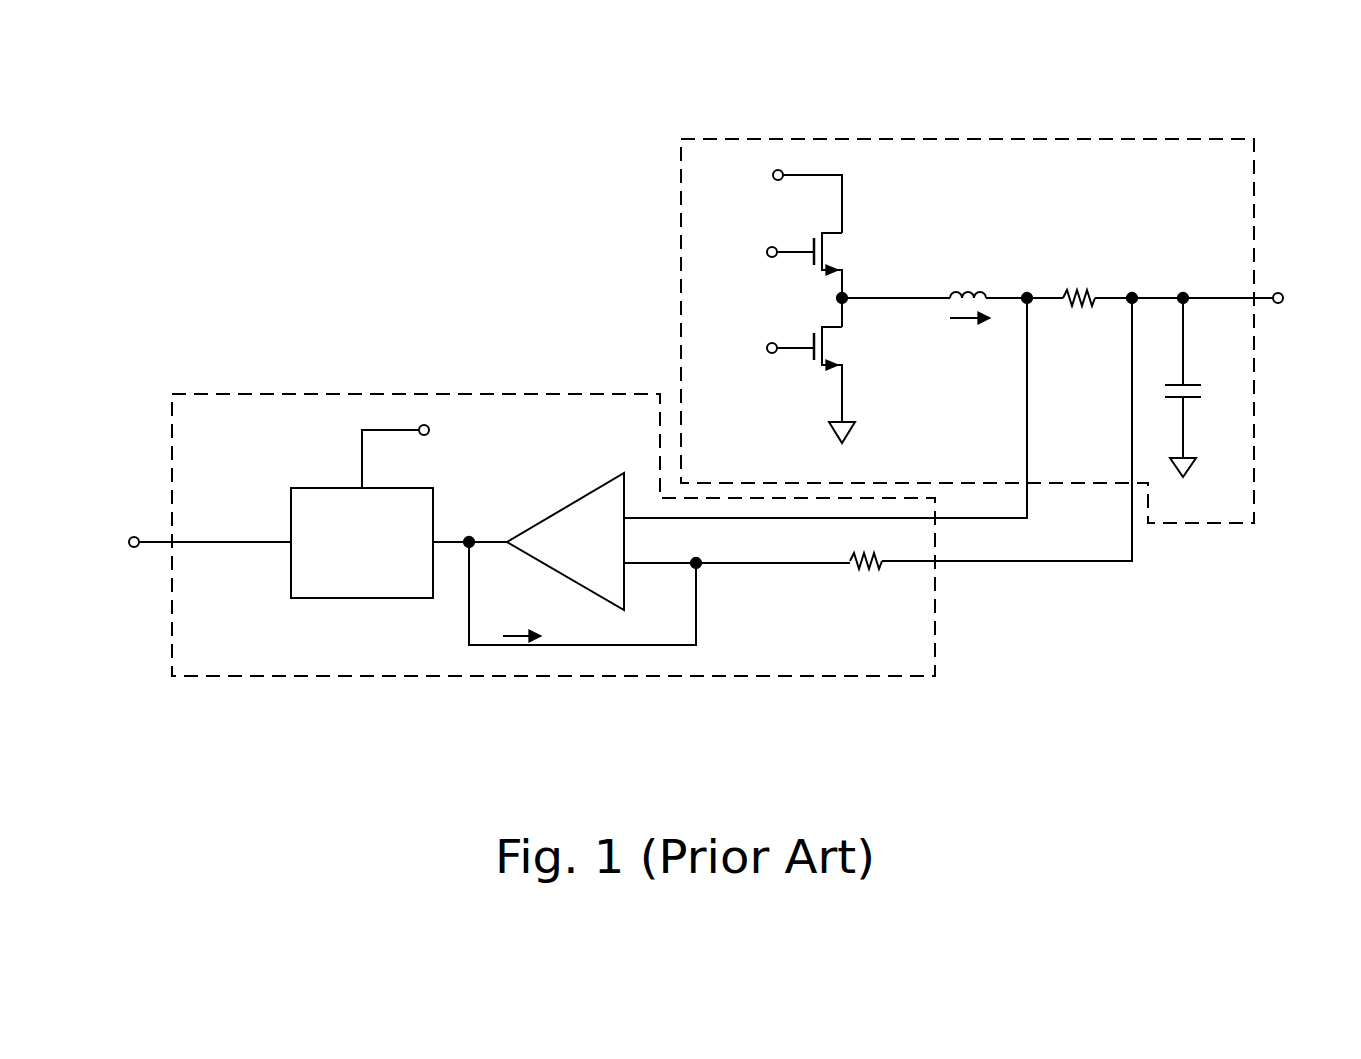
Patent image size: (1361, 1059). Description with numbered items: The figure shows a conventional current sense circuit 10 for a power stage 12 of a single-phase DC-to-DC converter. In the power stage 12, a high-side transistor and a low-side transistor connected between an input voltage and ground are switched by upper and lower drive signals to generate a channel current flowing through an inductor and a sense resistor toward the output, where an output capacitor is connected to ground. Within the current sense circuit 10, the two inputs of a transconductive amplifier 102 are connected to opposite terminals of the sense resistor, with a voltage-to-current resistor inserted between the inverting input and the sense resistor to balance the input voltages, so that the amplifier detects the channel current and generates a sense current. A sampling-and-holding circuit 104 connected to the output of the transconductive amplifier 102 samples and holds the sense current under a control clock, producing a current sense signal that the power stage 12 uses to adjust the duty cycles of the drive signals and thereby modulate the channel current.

The current sense circuit 10 is at (407, 394).
The power stage 12 is at (1013, 137).
The transconductive amplifier 102 is at (562, 505).
The sampling-and-holding circuit 104 is at (360, 598).